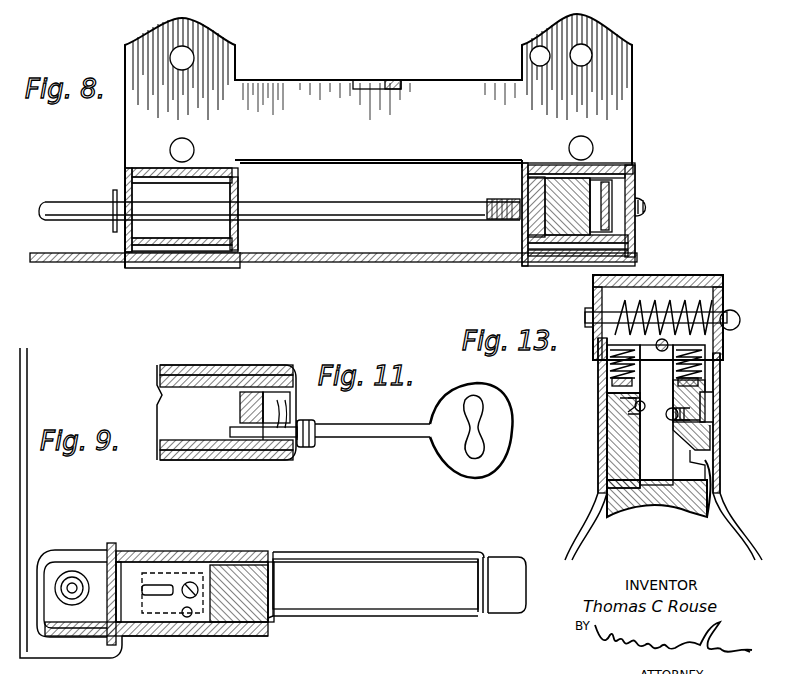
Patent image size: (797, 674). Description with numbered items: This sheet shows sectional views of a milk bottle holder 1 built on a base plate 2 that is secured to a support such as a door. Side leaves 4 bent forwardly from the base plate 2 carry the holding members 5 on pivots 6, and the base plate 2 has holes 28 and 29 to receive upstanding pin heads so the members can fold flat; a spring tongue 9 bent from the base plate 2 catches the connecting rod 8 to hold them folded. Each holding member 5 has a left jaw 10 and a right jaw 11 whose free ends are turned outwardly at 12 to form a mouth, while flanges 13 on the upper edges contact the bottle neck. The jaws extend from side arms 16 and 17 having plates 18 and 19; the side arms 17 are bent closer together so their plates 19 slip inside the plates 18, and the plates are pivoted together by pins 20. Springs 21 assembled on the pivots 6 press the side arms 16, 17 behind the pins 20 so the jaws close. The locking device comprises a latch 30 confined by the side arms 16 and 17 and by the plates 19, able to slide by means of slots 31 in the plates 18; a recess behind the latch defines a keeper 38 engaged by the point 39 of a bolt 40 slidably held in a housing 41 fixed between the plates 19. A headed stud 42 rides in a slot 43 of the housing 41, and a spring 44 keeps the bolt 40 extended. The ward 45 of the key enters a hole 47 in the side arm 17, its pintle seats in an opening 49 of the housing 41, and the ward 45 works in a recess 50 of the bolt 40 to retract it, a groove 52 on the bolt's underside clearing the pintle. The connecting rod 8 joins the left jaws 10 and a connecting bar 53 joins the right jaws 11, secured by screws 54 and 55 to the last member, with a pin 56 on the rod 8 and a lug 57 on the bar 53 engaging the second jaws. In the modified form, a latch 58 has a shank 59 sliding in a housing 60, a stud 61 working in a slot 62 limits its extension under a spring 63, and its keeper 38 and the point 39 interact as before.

In FIG. 8, the holder 1 is at (420, 53).
In FIG. 13, the holder 1 is at (707, 277).
In FIG. 9, the holder 1 is at (41, 533).
In FIG. 8, the base plate 2 is at (290, 92).
In FIG. 13, the base plate 2 is at (648, 282).
In FIG. 9, the base plate 2 is at (30, 405).
In FIG. 8, the side leaves 4 is at (125, 165).
In FIG. 13, the side leaves 4 is at (722, 360).
In FIG. 8, the holding member 5 is at (246, 158).
In FIG. 13, the holding member 5 is at (589, 479).
In FIG. 9, the holding member 5 is at (332, 552).
In FIG. 13, the pivot 6 is at (740, 321).
In FIG. 9, the pivot 6 is at (72, 583).
In FIG. 8, the connecting rod 8 is at (370, 215).
In FIG. 8, the spring tongue 9 is at (372, 82).
In FIG. 13, the left jaw 10 is at (578, 530).
In FIG. 13, the right jaw 11 is at (740, 528).
In FIG. 9, the right jaw 11 is at (405, 573).
In FIG. 9, the outwardly turned extremities 12 is at (490, 570).
In FIG. 9, the flanges 13 is at (362, 558).
In FIG. 8, the side arm 16 is at (130, 168).
In FIG. 13, the side arm 16 is at (608, 380).
In FIG. 11, the side arm 16 is at (378, 438).
In FIG. 8, the side arm 17 is at (238, 198).
In FIG. 8, the plates 18 is at (150, 245).
In FIG. 11, the plates 18 is at (170, 368).
In FIG. 9, the plates 18 is at (240, 551).
In FIG. 8, the plates 19 is at (160, 175).
In FIG. 11, the plates 19 is at (185, 380).
In FIG. 9, the plates 19 is at (268, 553).
In FIG. 13, the pins 20 is at (668, 344).
In FIG. 9, the pins 20 is at (80, 575).
In FIG. 13, the springs 21 is at (688, 308).
In FIG. 9, the springs 21 is at (111, 543).
In FIG. 8, the hole 28 is at (183, 152).
In FIG. 8, the hole 29 is at (540, 48).
In FIG. 8, the latch 30 is at (592, 180).
In FIG. 9, the latch 30 is at (275, 580).
In FIG. 9, the slots 31 is at (125, 628).
In FIG. 13, the keeper 38 is at (705, 490).
In FIG. 8, the point 39 is at (592, 252).
In FIG. 13, the point 39 is at (688, 456).
In FIG. 13, the bolt 40 is at (722, 435).
In FIG. 11, the bolt 40 is at (276, 368).
In FIG. 13, the housing 41 is at (700, 364).
In FIG. 11, the housing 41 is at (240, 395).
In FIG. 9, the housing 41 is at (135, 552).
In FIG. 9, the headed stud 42 is at (190, 582).
In FIG. 13, the slot 43 is at (640, 403).
In FIG. 9, the slot 43 is at (157, 585).
In FIG. 13, the spring 44 is at (700, 370).
In FIG. 11, the ward 45 is at (296, 400).
In FIG. 11, the hole 47 is at (292, 422).
In FIG. 11, the opening 49 is at (232, 424).
In FIG. 13, the recess 50 is at (713, 412).
In FIG. 11, the groove 52 is at (255, 376).
In FIG. 9, the groove 52 is at (228, 585).
In FIG. 8, the connecting bar 53 is at (384, 262).
In FIG. 8, the screw 54 is at (506, 220).
In FIG. 9, the screw 54 is at (203, 620).
In FIG. 8, the screw 55 is at (648, 206).
In FIG. 8, the pin 56 is at (113, 192).
In FIG. 8, the lug 57 is at (238, 234).
In FIG. 13, the latch 58 is at (636, 510).
In FIG. 13, the shank 59 is at (615, 445).
In FIG. 13, the housing 60 is at (600, 336).
In FIG. 13, the stud 61 is at (620, 406).
In FIG. 13, the slot 62 is at (620, 398).
In FIG. 13, the spring 63 is at (607, 367).